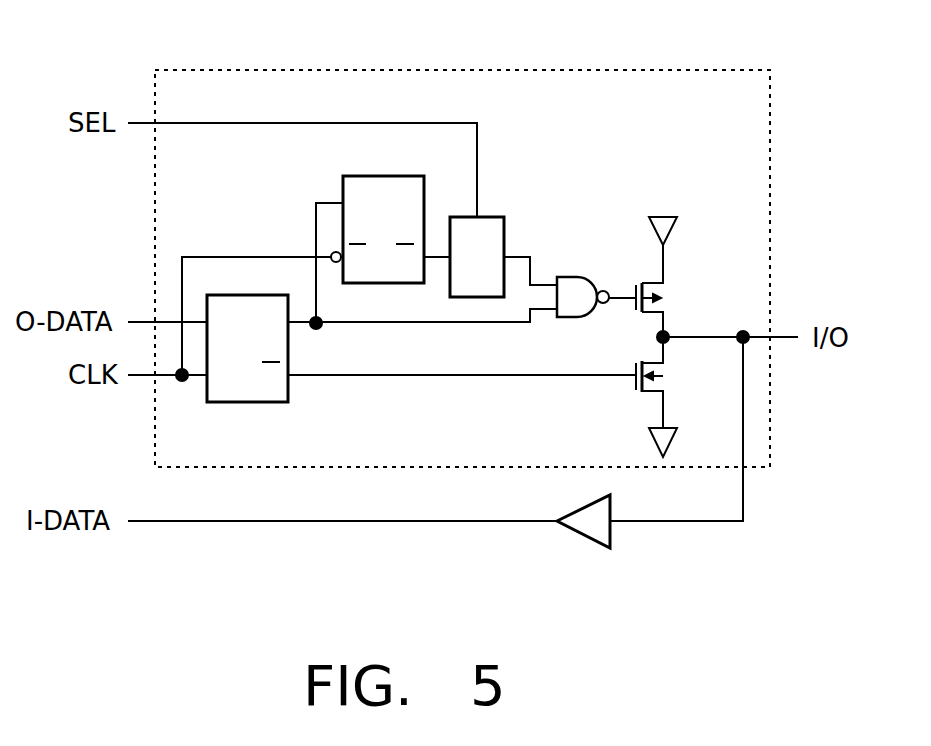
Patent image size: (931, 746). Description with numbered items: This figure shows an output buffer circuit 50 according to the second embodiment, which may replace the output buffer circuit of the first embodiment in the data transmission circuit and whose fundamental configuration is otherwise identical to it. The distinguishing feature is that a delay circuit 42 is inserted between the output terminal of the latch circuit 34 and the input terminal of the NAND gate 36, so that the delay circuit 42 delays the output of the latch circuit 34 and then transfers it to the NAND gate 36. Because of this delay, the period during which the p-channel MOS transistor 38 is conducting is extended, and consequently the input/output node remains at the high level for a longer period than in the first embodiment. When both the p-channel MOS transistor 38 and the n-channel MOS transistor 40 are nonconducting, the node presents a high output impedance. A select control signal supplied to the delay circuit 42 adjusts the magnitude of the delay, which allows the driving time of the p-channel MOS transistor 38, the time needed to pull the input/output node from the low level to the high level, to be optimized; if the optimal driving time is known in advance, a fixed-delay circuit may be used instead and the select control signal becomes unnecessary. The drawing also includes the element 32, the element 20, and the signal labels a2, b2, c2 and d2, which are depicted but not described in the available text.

The output buffer circuit 50 is at (236, 67).
The first flip-flop 32 is at (248, 402).
The latch circuit 34 is at (385, 176).
The delay circuit 42 is at (458, 216).
The NAND gate 36 is at (563, 277).
The p-channel MOS transistor 38 is at (672, 298).
The n-channel MOS transistor 40 is at (672, 376).
The input buffer 20 is at (612, 540).
The signal a2 is at (344, 325).
The signal b2 is at (525, 256).
The signal c2 is at (623, 294).
The signal d2 is at (344, 378).